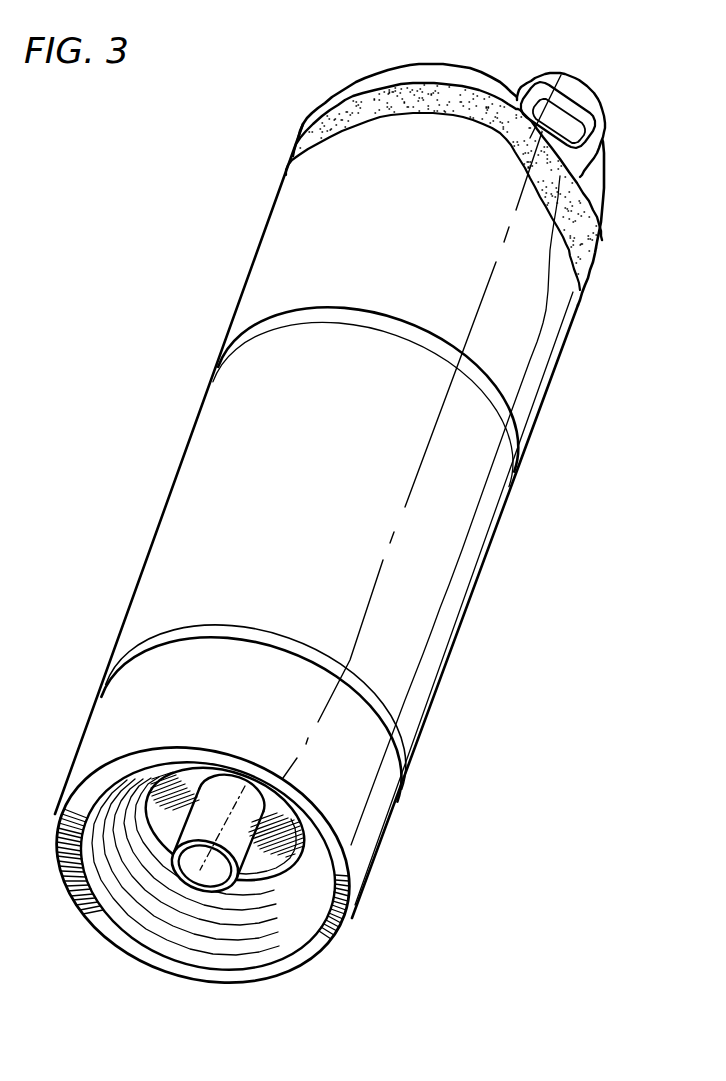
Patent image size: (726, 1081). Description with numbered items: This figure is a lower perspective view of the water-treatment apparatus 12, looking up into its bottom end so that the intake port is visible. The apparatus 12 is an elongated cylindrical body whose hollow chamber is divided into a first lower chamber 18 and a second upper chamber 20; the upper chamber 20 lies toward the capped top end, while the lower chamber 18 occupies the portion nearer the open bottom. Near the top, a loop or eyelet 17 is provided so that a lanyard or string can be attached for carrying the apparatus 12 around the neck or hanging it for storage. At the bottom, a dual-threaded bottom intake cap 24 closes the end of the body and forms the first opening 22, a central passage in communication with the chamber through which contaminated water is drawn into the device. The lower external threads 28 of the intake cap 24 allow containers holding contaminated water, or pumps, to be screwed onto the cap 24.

The apparatus 12 is at (345, 543).
The eyelet 17 is at (580, 107).
The first lower chamber 18 is at (140, 505).
The second upper chamber 20 is at (238, 225).
The first opening 22 is at (208, 870).
The bottom intake cap 24 is at (350, 833).
The lower external threads 28 is at (128, 905).